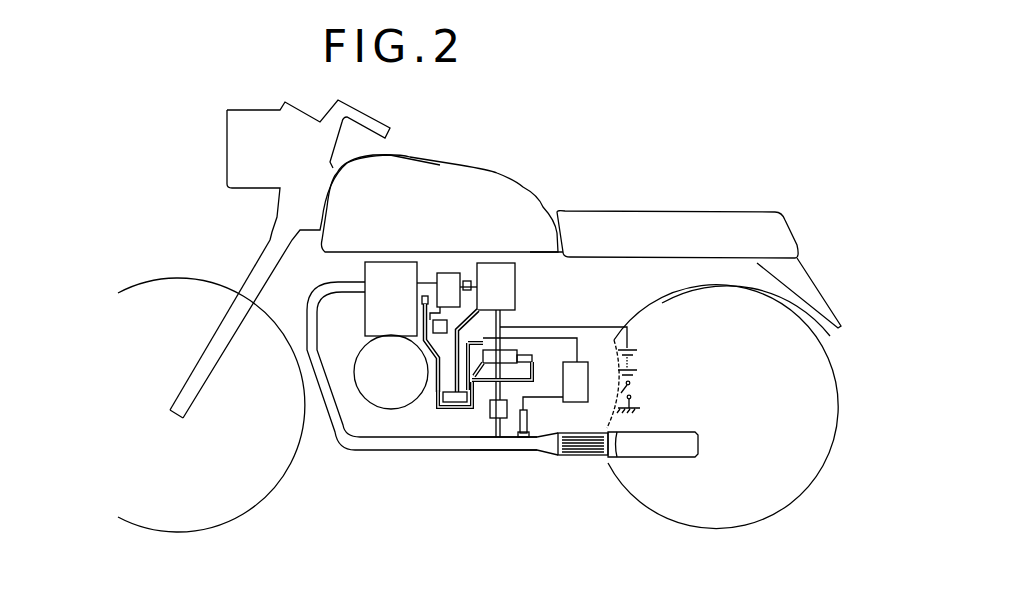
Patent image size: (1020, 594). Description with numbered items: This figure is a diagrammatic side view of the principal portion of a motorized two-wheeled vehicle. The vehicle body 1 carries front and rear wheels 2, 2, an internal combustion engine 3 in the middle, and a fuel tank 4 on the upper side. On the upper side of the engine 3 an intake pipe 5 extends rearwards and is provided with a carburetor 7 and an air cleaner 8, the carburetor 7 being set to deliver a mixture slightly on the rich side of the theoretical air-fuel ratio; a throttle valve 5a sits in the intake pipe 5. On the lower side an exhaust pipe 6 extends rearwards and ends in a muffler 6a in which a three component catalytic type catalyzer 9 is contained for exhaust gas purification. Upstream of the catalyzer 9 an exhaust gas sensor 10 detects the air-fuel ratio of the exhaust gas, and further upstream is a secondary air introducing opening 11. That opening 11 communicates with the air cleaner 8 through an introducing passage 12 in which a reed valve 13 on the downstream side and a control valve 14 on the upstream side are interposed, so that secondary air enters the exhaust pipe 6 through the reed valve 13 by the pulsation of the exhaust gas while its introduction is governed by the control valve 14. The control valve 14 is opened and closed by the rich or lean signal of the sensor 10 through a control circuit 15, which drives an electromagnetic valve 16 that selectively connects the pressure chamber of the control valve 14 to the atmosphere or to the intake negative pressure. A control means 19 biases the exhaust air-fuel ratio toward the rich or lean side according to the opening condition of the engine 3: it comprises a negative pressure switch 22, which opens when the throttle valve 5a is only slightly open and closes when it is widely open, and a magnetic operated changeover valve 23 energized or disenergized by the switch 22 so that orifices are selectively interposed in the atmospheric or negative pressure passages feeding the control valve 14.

The vehicle body 1 is at (236, 103).
The front and rear wheels 2 is at (280, 483).
The internal combustion engine 3 is at (372, 310).
The fuel tank 4 is at (445, 170).
The intake pipe 5 is at (463, 278).
The throttle valve 5a is at (473, 280).
The exhaust pipe 6 is at (343, 437).
The muffler 6a is at (670, 440).
The carburetor 7 is at (447, 270).
The air cleaner 8 is at (515, 288).
The catalyzer 9 is at (583, 434).
The exhaust gas sensor 10 is at (523, 436).
The secondary air introducing opening 11 is at (498, 440).
The introducing passage 12 is at (501, 422).
The reed valve 13 is at (526, 374).
The control valve 14 is at (510, 350).
The control circuit 15 is at (585, 362).
The electromagnetic valve 16 is at (483, 361).
The control means 19 is at (430, 411).
The negative pressure switch 22 is at (432, 325).
The magnetic operated changeover valve 23 is at (460, 410).